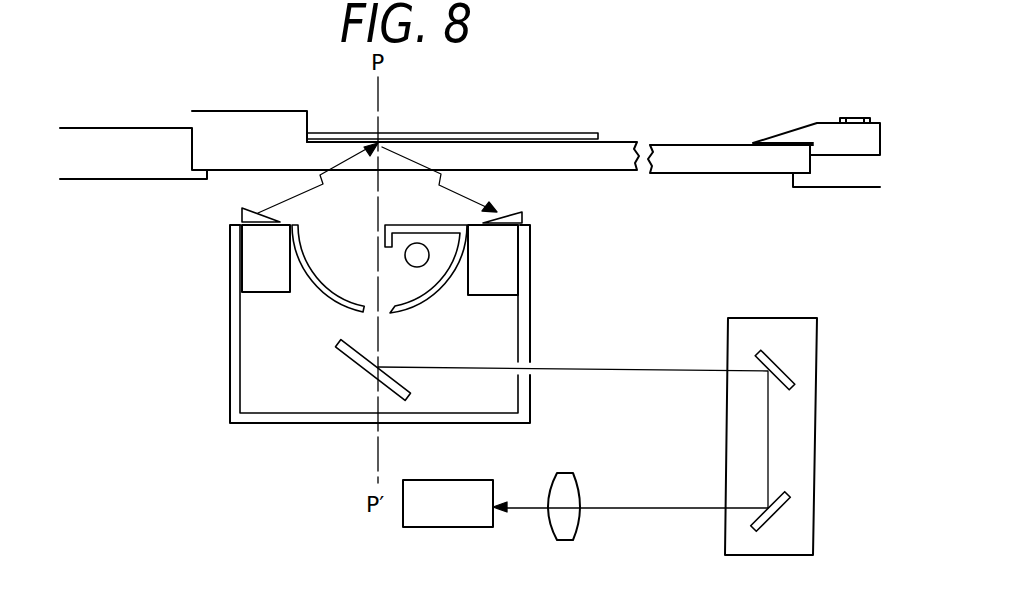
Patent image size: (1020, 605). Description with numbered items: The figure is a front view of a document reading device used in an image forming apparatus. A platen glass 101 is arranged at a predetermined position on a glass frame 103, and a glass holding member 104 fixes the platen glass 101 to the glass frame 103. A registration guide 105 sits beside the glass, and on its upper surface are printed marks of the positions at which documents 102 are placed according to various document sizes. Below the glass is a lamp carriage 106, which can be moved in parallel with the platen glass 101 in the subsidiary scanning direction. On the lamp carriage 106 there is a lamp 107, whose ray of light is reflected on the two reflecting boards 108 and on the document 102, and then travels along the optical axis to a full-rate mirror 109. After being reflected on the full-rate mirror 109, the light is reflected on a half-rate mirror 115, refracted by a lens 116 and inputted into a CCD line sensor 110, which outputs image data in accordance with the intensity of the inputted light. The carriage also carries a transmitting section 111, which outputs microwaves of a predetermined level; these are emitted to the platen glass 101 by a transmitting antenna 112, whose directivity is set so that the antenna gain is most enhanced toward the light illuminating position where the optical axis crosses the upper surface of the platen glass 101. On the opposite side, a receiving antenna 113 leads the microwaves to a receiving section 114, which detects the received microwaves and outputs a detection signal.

The platen glass 101 is at (683, 150).
The document 102 is at (553, 132).
The glass frame 103 is at (100, 170).
The glass holding member 104 is at (787, 138).
The registration guide 105 is at (274, 121).
The lamp carriage 106 is at (305, 418).
The lamp 107 is at (426, 262).
The reflecting boards 108 is at (405, 300).
The full-rate mirror 109 is at (393, 393).
The CCD line sensor 110 is at (460, 480).
The transmitting section 111 is at (248, 280).
The transmitting antenna 112 is at (243, 216).
The receiving prism 113 is at (523, 216).
The receiving section 114 is at (510, 280).
The half-rate mirror 115 is at (818, 342).
The lens 116 is at (580, 493).